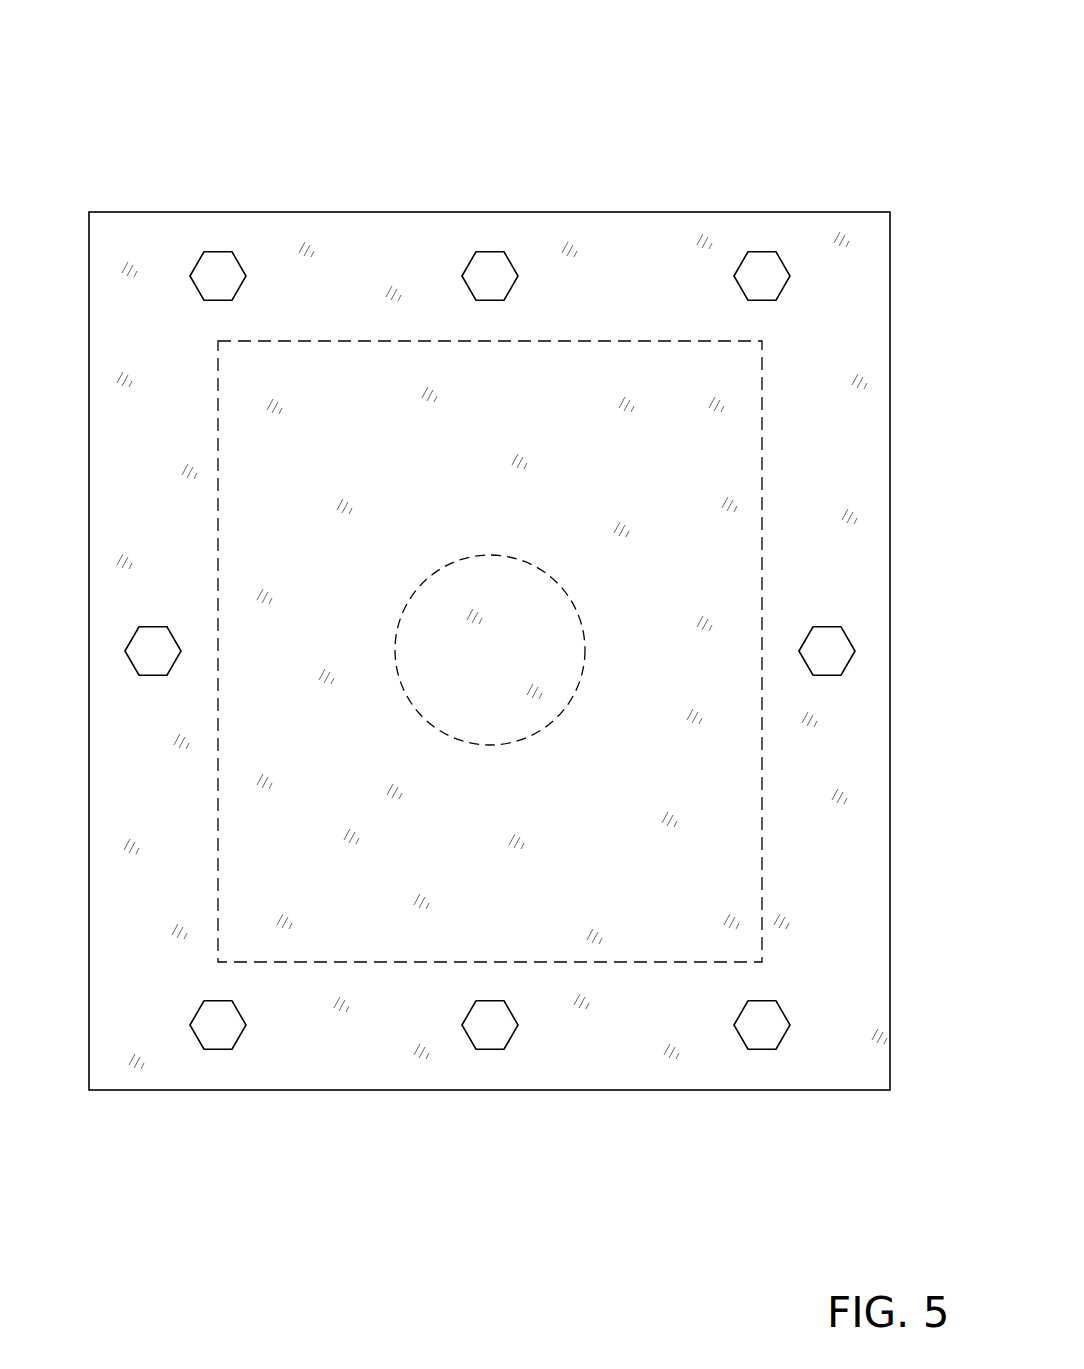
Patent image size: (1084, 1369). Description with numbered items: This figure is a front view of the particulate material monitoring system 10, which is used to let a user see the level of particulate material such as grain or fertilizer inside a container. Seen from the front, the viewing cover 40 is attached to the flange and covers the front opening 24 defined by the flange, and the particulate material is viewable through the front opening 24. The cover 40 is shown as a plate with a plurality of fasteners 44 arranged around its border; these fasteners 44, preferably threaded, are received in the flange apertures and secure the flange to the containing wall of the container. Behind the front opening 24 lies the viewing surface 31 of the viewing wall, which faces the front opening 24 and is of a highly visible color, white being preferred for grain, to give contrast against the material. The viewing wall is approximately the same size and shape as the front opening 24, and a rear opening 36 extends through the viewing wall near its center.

The particulate material monitoring system 10 is at (527, 610).
The front opening 24 is at (648, 962).
The viewing surface 31 is at (675, 763).
The rear opening 36 is at (572, 604).
The viewing cover 40 is at (318, 1050).
The fasteners 44 is at (490, 274).